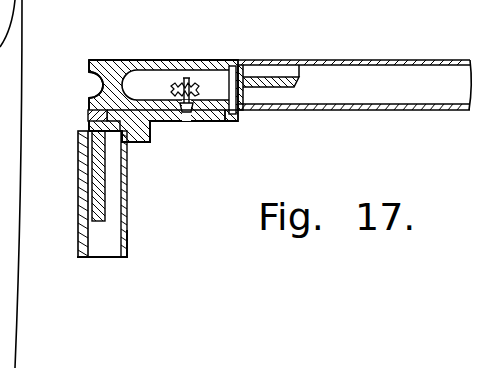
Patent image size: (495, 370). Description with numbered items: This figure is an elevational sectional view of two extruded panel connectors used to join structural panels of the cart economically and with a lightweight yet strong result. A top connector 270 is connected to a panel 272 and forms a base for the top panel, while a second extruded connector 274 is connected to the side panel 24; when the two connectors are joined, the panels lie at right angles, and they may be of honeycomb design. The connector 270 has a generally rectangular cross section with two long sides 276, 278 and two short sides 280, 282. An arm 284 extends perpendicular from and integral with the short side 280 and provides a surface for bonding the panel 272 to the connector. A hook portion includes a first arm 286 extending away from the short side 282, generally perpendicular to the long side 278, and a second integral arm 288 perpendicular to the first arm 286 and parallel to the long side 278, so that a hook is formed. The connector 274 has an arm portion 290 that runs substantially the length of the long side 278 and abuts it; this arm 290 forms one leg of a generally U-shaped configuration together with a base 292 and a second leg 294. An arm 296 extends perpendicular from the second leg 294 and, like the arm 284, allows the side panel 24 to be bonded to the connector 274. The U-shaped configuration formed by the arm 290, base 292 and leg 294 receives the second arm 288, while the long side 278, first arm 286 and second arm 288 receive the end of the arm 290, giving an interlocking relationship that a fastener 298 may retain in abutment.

The side panel 24 is at (123, 255).
The top connector 270 is at (169, 56).
The panel 272 is at (417, 75).
The second extruded connector 274 is at (155, 124).
The long side 276 is at (148, 59).
The long side 278 is at (236, 66).
The short side 280 is at (241, 66).
The short side 282 is at (115, 59).
The arm 284 is at (293, 80).
The first arm 286 is at (90, 116).
The second arm 288 is at (84, 157).
The arm portion 290 is at (229, 122).
The base 292 is at (147, 135).
The second leg 294 is at (128, 165).
The arm 296 is at (107, 221).
The fastener 298 is at (190, 121).